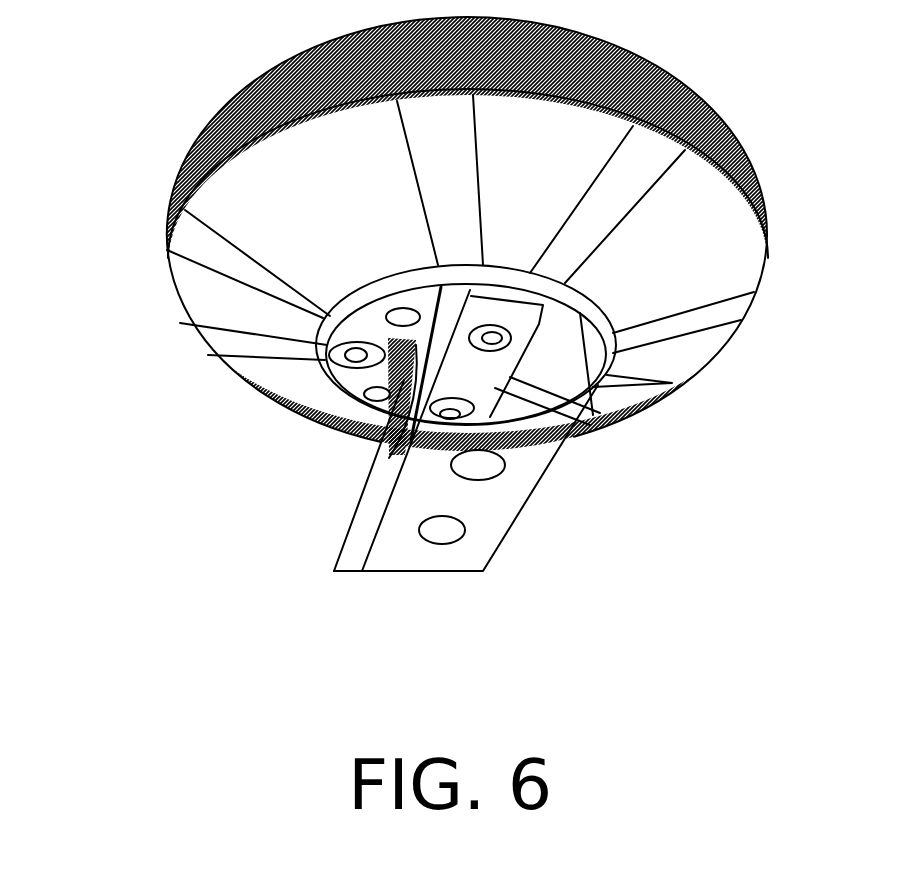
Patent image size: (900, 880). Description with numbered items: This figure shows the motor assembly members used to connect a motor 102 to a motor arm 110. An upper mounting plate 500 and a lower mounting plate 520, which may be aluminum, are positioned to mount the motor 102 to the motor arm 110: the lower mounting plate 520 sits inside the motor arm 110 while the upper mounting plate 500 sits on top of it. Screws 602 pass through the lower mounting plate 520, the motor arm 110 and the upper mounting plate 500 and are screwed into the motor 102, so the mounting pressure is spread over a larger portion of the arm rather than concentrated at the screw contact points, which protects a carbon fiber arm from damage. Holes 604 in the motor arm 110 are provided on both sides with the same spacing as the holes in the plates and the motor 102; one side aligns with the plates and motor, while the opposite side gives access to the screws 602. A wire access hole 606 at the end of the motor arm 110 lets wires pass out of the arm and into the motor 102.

The motor 102 is at (770, 263).
The motor arm 110 is at (545, 488).
The upper mounting plate 500 is at (332, 357).
The lower mounting plate 520 is at (528, 378).
The screws 602 is at (507, 340).
The holes 604 is at (467, 532).
The wire access hole 606 is at (395, 449).